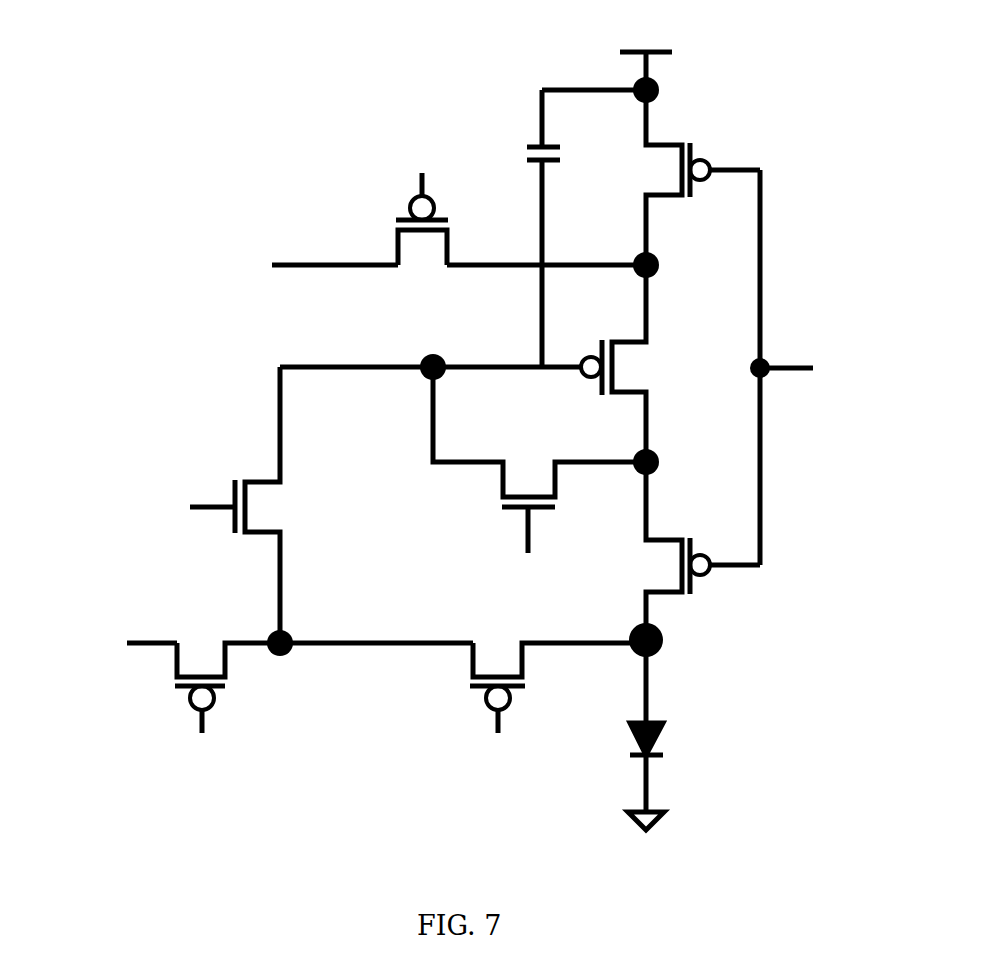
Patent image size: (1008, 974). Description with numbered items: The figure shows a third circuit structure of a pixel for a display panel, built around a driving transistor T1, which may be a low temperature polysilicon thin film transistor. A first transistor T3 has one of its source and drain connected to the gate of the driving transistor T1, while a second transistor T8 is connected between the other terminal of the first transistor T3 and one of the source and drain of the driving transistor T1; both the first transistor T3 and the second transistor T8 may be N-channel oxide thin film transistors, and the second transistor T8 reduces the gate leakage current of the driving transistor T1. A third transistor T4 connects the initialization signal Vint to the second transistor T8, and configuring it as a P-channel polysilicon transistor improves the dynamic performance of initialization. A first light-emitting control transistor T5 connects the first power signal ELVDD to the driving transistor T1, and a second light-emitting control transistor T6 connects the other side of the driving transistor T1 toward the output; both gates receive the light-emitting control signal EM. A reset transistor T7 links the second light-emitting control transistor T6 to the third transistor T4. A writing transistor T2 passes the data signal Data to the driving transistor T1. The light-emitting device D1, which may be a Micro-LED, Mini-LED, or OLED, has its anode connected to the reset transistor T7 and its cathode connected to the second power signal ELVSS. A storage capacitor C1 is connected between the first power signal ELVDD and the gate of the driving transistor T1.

The driving transistor T1 is at (470, 363).
The writing transistor T2 is at (422, 246).
The first transistor T3 is at (546, 437).
The third transistor T4 is at (324, 665).
The first light-emitting control transistor T5 is at (693, 177).
The second light-emitting control transistor T6 is at (696, 552).
The reset transistor T7 is at (566, 665).
The second transistor T8 is at (264, 505).
The storage capacitor C1 is at (559, 228).
The light-emitting device D1 is at (667, 727).
The first power signal ELVDD is at (616, 61).
The second power signal ELVSS is at (643, 837).
The light-emitting control signal EM is at (806, 367).
The data signal Data is at (432, 265).
The initialization signal Vint is at (118, 642).